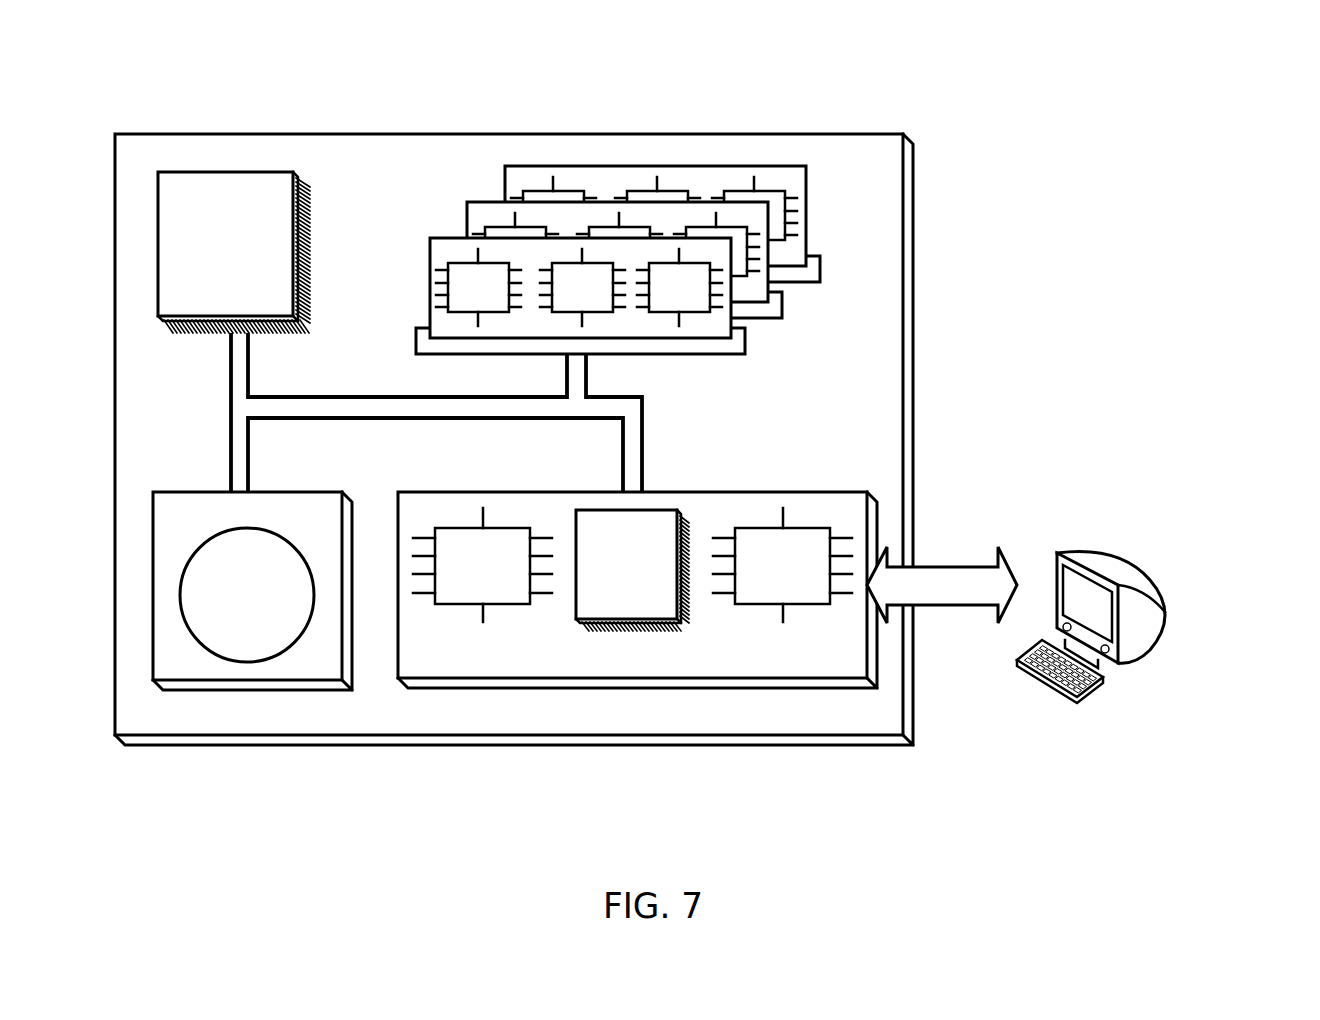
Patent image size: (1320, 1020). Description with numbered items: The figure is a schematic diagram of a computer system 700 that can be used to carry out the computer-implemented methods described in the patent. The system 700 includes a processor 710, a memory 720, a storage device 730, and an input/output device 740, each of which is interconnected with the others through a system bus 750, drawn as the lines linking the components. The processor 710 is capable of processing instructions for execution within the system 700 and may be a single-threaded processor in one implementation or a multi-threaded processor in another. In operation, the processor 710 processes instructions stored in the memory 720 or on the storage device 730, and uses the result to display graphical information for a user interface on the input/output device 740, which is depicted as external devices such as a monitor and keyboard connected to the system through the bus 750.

The computer system 700 is at (223, 61).
The processor 710 is at (234, 252).
The memory 720 is at (795, 288).
The storage device 730 is at (252, 591).
The input/output device 740 is at (1055, 554).
The system bus 750 is at (393, 407).